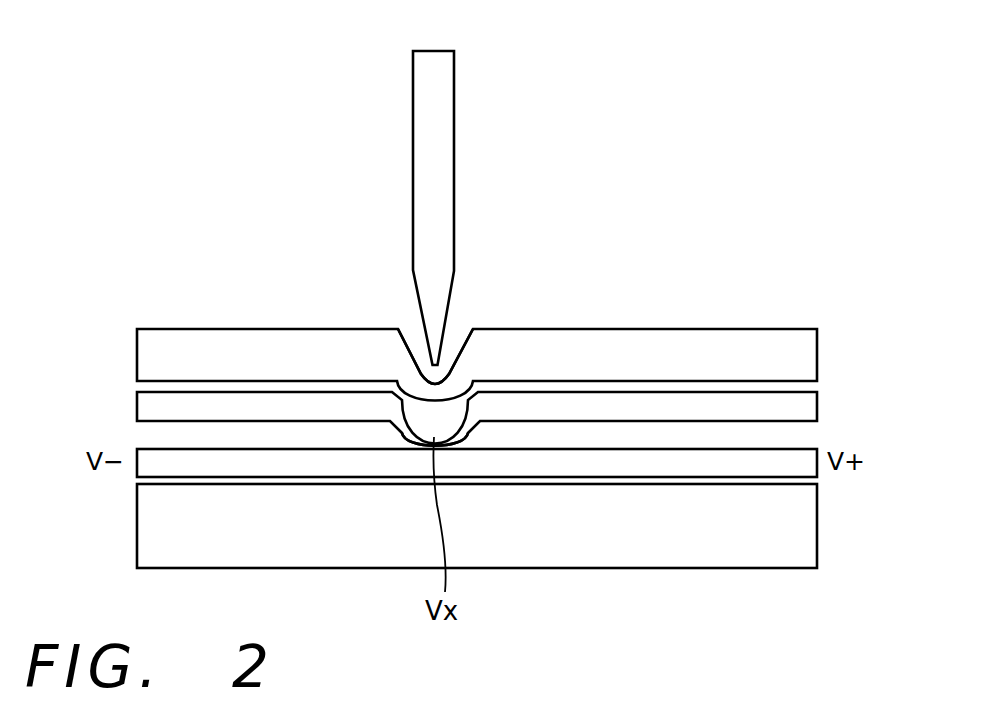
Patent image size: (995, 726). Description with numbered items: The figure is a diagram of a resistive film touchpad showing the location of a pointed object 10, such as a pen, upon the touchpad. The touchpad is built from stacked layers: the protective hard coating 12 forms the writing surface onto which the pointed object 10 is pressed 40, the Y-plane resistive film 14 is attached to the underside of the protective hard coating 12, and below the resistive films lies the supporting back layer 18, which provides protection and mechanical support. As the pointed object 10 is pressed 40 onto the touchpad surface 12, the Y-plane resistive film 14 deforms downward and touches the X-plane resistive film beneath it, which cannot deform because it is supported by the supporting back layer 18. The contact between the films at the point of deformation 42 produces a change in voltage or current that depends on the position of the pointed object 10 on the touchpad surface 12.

The pointed object 10 is at (454, 158).
The protective hard coating 12 is at (800, 353).
The Y-plane resistive film 14 is at (800, 403).
The supporting back layer 18 is at (795, 518).
The pressing 40 is at (455, 342).
The contact point 42 is at (436, 434).